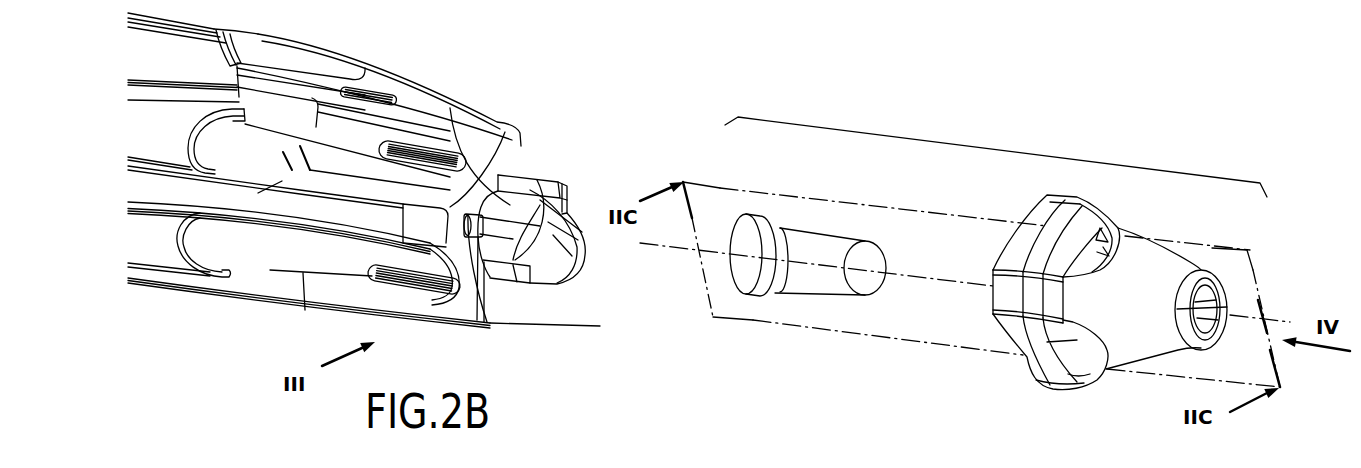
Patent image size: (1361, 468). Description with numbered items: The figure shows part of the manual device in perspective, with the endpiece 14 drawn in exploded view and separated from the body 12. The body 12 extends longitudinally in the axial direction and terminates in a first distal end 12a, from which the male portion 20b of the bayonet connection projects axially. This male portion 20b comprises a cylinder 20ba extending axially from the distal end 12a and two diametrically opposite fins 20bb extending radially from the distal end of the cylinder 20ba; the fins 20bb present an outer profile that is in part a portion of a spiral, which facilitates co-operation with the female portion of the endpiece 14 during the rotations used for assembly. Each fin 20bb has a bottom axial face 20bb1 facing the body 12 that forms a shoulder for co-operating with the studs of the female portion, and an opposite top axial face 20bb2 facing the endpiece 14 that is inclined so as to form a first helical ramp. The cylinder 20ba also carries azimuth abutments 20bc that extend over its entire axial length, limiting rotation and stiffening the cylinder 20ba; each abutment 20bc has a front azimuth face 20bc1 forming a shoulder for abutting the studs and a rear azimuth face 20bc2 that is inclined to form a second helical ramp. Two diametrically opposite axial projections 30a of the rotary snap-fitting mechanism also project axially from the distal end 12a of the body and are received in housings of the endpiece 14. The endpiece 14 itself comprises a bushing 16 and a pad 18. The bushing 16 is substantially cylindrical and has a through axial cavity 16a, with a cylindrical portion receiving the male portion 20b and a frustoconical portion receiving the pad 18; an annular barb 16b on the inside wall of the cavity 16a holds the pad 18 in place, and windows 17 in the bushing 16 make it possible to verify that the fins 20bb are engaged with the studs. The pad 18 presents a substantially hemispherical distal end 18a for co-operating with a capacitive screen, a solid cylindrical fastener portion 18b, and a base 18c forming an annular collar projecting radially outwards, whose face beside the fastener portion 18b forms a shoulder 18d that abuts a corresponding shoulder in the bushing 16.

The body 12 is at (196, 307).
The first distal end 12a is at (480, 321).
The axial projections 30a is at (483, 252).
The male portion 20b is at (544, 205).
The cylinder 20ba is at (498, 203).
The fins 20bb is at (586, 195).
The bottom axial face 20bb1 is at (540, 205).
The top axial face 20bb2 is at (558, 204).
The azimuth abutments 20bc is at (525, 190).
The front azimuth face 20bc1 is at (537, 182).
The rear azimuth face 20bc2 is at (530, 278).
The endpiece 14 is at (997, 148).
The pad 18 is at (825, 265).
The distal end 18a is at (870, 270).
The fastener portion 18b is at (822, 240).
The base 18c is at (752, 227).
The shoulder 18d is at (787, 228).
The windows 17 is at (1097, 233).
The bushing 16 is at (1208, 280).
The through axial cavity 16a is at (1218, 324).
The annular barb 16b is at (1222, 297).